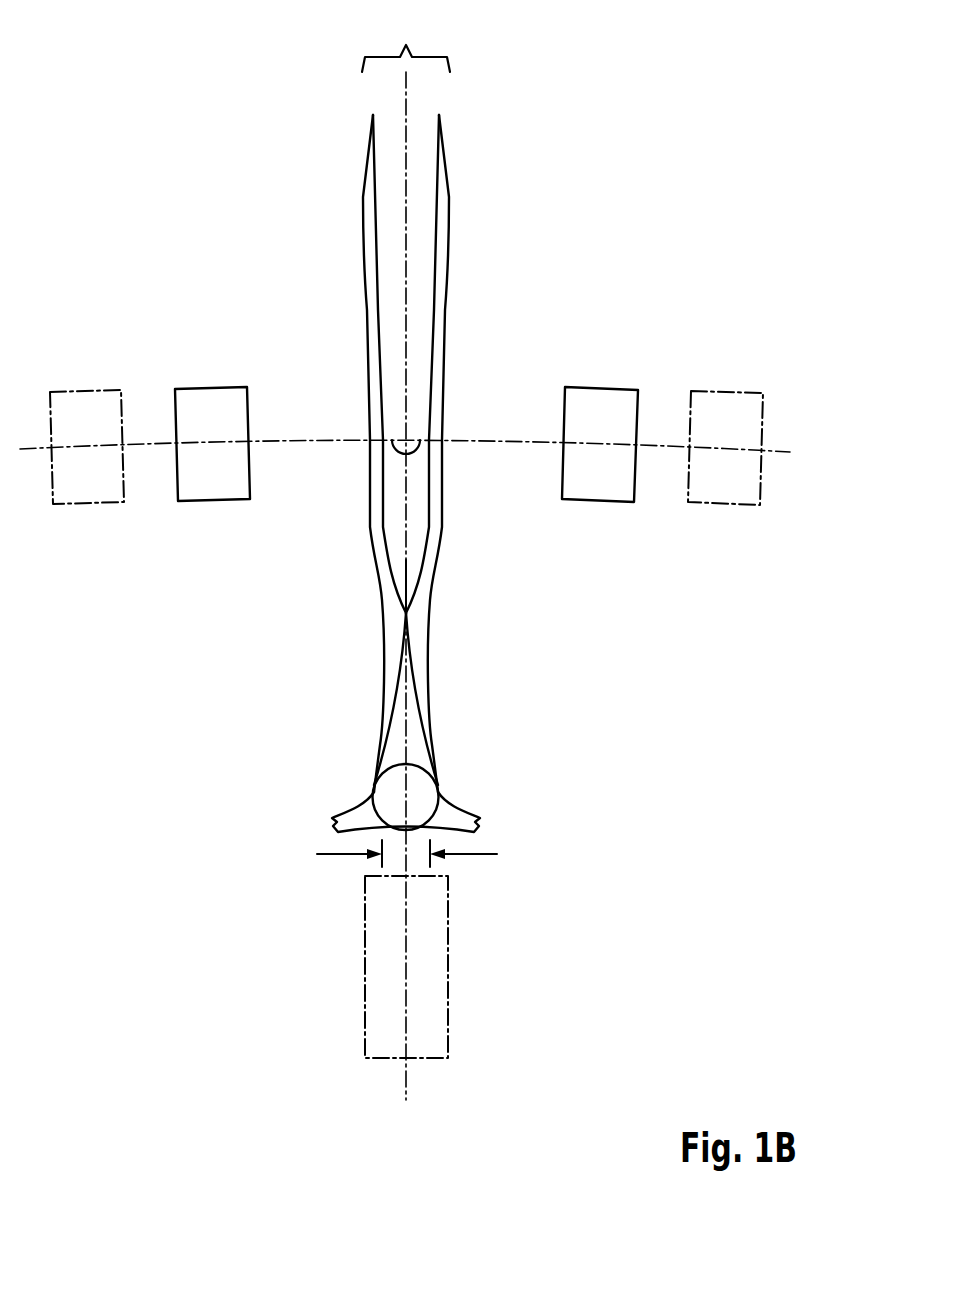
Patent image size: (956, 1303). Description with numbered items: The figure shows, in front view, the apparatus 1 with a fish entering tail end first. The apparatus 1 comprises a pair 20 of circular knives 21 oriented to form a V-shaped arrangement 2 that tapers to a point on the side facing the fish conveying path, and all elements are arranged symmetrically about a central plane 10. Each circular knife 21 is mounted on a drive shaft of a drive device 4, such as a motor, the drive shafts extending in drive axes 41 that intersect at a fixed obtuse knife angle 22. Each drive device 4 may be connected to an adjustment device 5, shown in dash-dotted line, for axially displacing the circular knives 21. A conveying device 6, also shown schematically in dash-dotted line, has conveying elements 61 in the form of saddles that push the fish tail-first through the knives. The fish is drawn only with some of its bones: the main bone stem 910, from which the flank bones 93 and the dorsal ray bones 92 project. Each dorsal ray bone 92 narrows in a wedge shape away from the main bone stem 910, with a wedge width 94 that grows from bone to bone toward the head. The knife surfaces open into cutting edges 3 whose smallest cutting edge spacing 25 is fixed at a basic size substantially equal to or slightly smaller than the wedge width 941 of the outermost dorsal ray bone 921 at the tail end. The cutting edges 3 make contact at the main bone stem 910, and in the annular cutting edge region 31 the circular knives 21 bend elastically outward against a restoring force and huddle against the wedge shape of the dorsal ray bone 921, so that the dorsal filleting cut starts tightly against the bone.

The apparatus 1 is at (666, 117).
The V-shaped arrangement 2 is at (332, 287).
The cutting edge 3 is at (431, 672).
The drive device 4 is at (209, 388).
The adjustment device 5 is at (85, 391).
The conveying device 6 is at (453, 967).
The conveying element 61 is at (448, 966).
The central plane 10 is at (406, 258).
The pair of circular knives 20 is at (406, 42).
The circular knife 21 is at (365, 207).
The knife angle 22 is at (420, 447).
The cutting edge spacing 25 is at (364, 864).
The cutting edge region 31 is at (403, 672).
The drive axis 41 is at (310, 438).
The dorsal ray bone 92 is at (442, 699).
The outermost dorsal ray bone 921 is at (398, 670).
The flank bone 93 is at (332, 828).
The wedge width 94 is at (364, 864).
The wedge width of outermost dorsal ray bone 941 is at (395, 857).
The main bone stem 910 is at (424, 790).